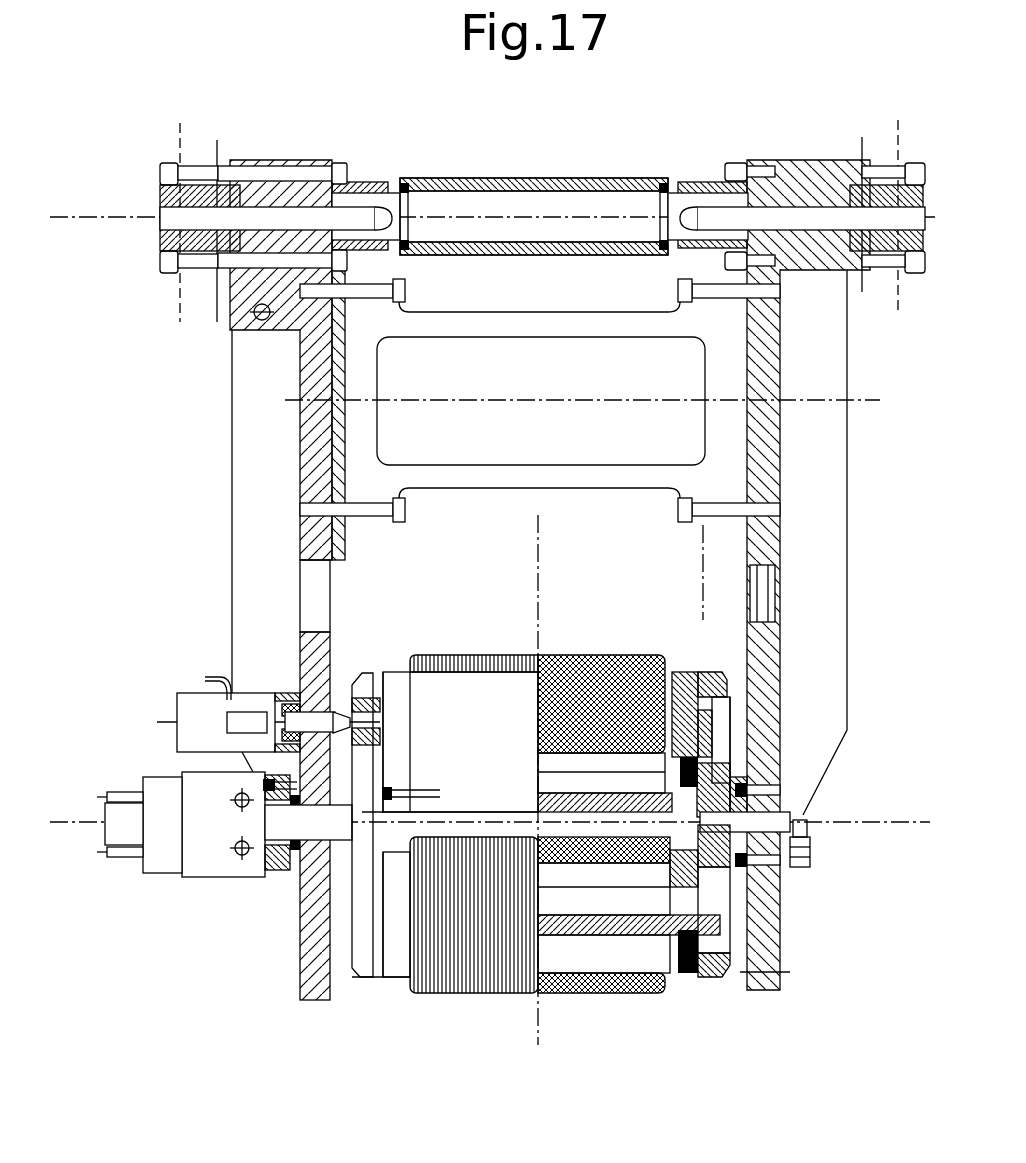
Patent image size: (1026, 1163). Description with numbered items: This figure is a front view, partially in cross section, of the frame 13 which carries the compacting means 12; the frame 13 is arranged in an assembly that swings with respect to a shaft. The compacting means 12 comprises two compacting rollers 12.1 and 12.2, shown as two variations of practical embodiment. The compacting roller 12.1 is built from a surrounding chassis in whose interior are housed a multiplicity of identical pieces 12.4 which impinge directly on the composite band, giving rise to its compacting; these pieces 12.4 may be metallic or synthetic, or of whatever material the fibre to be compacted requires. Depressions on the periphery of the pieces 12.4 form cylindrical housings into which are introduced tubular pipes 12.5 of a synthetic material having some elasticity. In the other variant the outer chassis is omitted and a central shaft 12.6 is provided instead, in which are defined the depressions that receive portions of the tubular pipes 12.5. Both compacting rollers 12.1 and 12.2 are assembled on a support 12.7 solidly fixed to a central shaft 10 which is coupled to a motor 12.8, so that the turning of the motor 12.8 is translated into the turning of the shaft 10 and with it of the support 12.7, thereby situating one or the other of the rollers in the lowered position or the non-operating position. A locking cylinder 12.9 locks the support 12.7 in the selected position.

The shaft 10 is at (297, 852).
The compacting means 12 is at (606, 834).
The compacting roller 12.1 is at (450, 640).
The compacting roller 12.2 is at (458, 1010).
The identical pieces 12.4 is at (483, 665).
The tubular pipes 12.5 is at (598, 770).
The central shaft 12.6 is at (694, 908).
The support 12.7 is at (363, 957).
The motor 12.8 is at (207, 862).
The locking cylinder 12.9 is at (185, 706).
The frame 13 is at (312, 440).